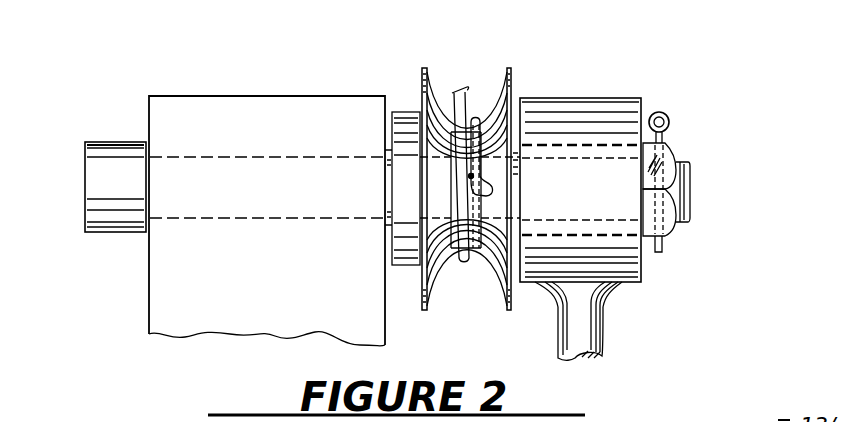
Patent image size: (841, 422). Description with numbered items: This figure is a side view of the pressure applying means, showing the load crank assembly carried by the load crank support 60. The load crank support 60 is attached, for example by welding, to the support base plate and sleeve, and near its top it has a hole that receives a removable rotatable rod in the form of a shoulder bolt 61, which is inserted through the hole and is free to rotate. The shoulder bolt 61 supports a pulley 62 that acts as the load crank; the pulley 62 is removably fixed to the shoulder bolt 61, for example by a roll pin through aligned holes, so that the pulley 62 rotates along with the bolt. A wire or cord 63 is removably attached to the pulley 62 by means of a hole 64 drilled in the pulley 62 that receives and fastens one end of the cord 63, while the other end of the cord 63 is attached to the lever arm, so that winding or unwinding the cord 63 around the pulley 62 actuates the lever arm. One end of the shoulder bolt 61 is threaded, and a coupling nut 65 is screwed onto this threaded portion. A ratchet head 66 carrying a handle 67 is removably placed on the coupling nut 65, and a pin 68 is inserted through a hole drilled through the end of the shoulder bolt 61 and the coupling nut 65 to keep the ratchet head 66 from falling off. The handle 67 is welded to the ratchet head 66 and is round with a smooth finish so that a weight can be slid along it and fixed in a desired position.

The load crank support 60 is at (193, 95).
The shoulder bolt 61 is at (93, 142).
The pulley 62 is at (510, 78).
The wire or cord 63 is at (465, 88).
The hole 64 is at (501, 197).
The coupling nut 65 is at (675, 148).
The ratchet head 66 is at (587, 97).
The handle 67 is at (603, 318).
The pin 68 is at (670, 118).